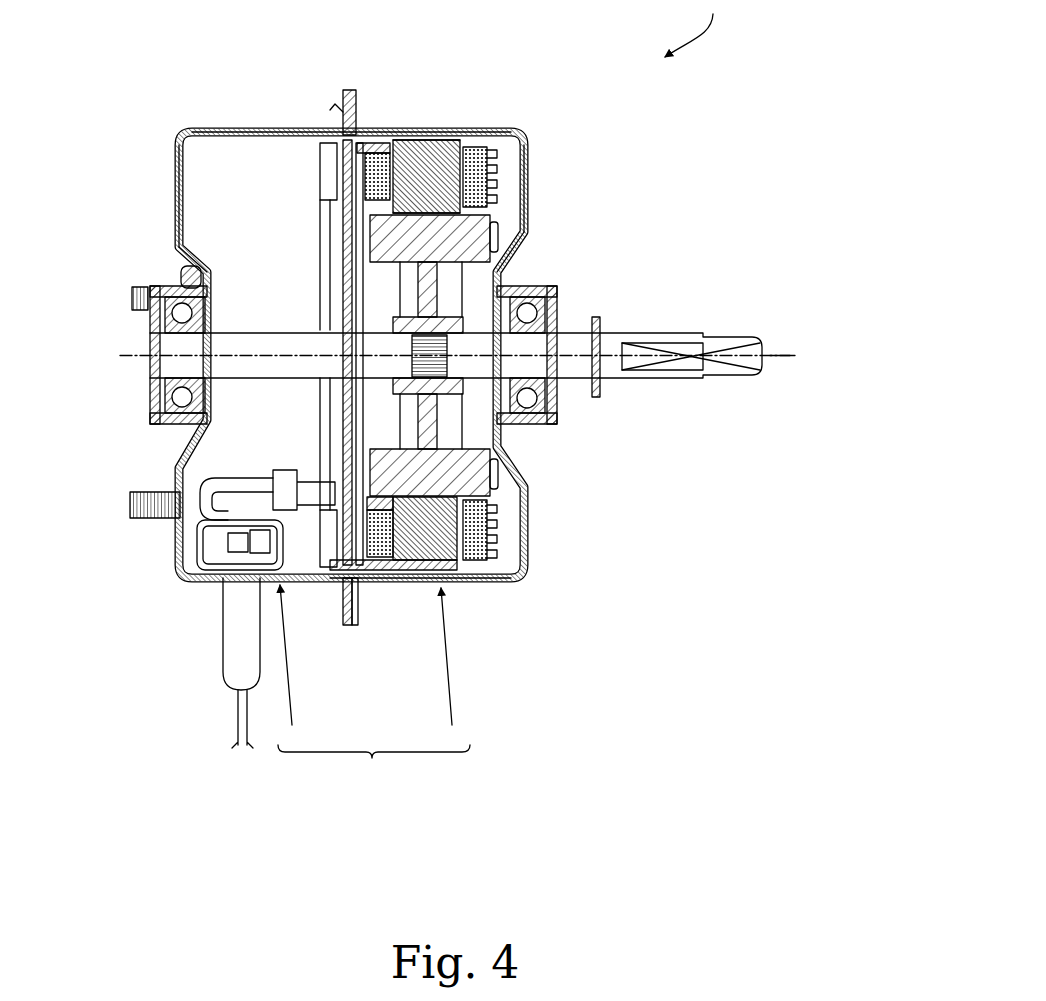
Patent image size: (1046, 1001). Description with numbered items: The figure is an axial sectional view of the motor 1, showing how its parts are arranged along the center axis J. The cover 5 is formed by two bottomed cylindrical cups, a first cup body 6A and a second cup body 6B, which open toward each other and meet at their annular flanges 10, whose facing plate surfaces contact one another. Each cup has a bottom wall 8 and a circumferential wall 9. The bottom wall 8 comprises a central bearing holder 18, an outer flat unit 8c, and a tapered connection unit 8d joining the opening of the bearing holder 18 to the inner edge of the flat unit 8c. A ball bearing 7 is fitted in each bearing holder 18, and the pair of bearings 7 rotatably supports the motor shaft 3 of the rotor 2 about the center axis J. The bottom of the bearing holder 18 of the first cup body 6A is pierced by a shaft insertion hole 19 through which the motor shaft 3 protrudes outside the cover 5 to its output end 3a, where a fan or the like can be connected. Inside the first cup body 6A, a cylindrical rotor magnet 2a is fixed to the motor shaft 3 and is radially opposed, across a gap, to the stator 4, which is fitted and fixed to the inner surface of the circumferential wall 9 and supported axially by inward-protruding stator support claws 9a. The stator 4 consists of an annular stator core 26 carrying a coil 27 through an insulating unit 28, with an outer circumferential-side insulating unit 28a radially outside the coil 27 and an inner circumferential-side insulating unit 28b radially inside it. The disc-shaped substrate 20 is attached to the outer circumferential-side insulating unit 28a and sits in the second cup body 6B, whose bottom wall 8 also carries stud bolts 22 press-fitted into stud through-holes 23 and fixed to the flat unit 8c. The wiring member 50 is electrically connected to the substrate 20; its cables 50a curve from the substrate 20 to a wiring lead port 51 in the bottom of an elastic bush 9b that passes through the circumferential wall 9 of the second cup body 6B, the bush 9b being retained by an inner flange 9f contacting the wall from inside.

The motor 1 is at (693, 28).
The rotor 2 is at (479, 232).
The rotor magnet 2a is at (474, 470).
The motor shaft 3 is at (612, 338).
The output end 3a is at (740, 380).
The stator 4 is at (470, 135).
The cover 5 is at (374, 763).
The first cup body 6A is at (452, 666).
The second cup body 6B is at (291, 665).
The bearing 7 is at (172, 425).
The bottom wall 8 is at (173, 478).
The flat unit 8c is at (176, 200).
The connection unit 8d is at (186, 262).
The circumferential wall 9 is at (238, 126).
The stator support claw 9a is at (466, 582).
The bush 9b is at (238, 660).
The flange 9f is at (274, 542).
The flange 10 is at (348, 627).
The bearing holder 18 is at (192, 284).
The shaft insertion hole 19 is at (560, 372).
The substrate 20 is at (336, 241).
The stud bolt 22 is at (133, 522).
The stud through-hole 23 is at (196, 515).
The stator core 26 is at (440, 150).
The coil 27 is at (428, 140).
The insulating unit 28 is at (352, 143).
The outer circumferential-side insulating unit 28a is at (362, 143).
The inner circumferential-side insulating unit 28b is at (345, 130).
The wiring member 50 is at (233, 718).
The cable 50a is at (241, 488).
The wiring lead port 51 is at (222, 582).
The center axis J is at (776, 352).